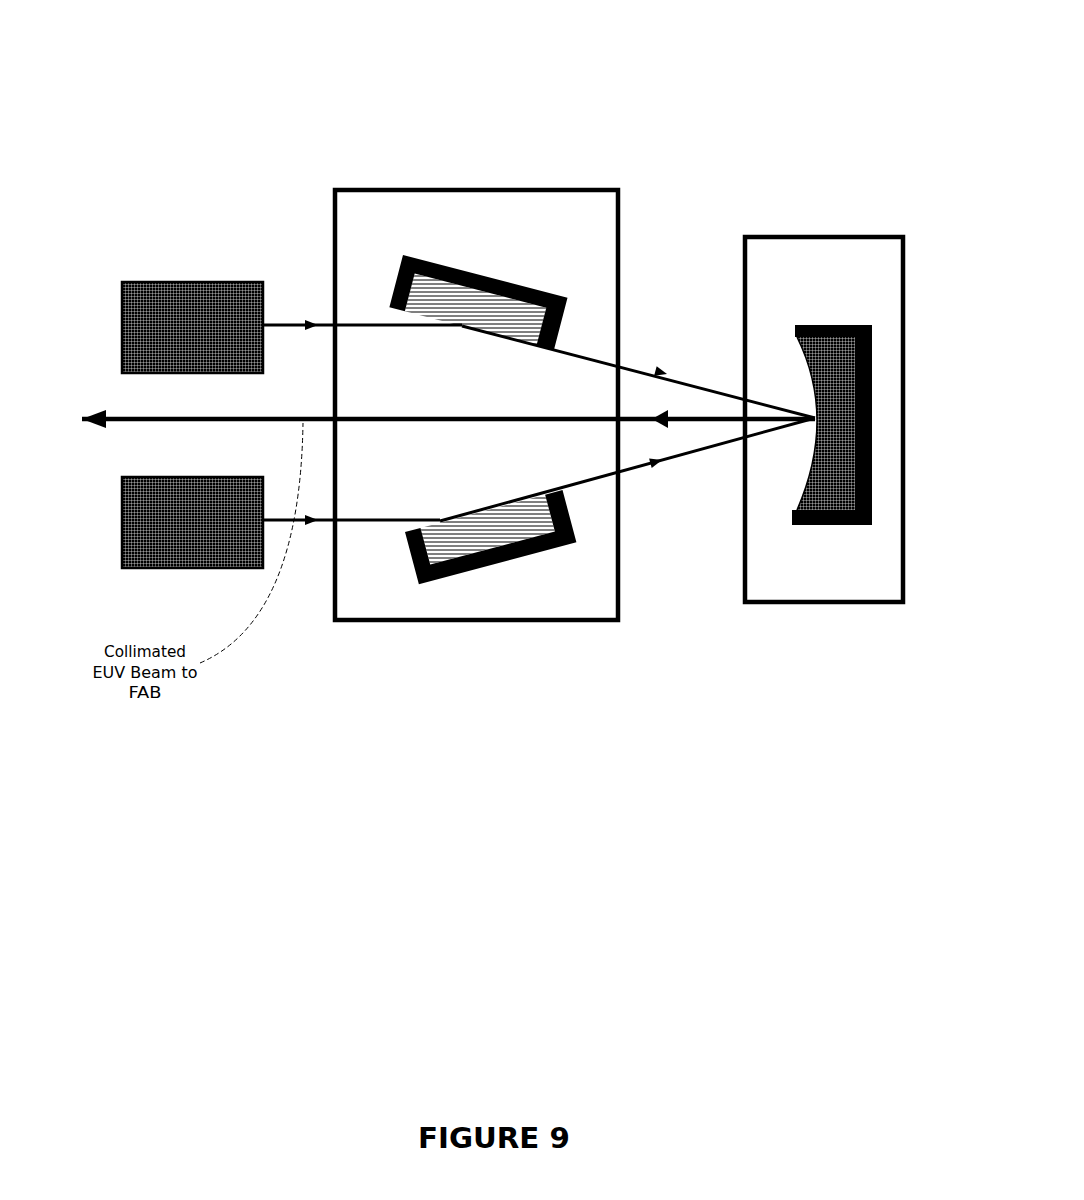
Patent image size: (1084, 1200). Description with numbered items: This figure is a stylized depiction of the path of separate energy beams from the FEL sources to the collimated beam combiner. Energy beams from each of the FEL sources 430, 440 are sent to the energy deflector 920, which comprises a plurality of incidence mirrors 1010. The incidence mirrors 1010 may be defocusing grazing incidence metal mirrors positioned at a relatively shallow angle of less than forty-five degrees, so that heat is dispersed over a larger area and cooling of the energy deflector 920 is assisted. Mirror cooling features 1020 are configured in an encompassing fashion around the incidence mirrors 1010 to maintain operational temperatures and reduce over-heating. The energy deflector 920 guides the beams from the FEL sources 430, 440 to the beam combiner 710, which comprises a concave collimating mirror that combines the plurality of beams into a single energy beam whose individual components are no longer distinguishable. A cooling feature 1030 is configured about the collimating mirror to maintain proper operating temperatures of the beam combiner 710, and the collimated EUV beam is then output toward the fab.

The FEL source 430 is at (222, 280).
The FEL source 440 is at (208, 572).
The energy deflector 920 is at (477, 183).
The beam combiner 710 is at (857, 237).
The incidence mirror 1010 is at (460, 552).
The mirror cooling feature 1020 is at (552, 552).
The cooling feature 1030 is at (612, 943).